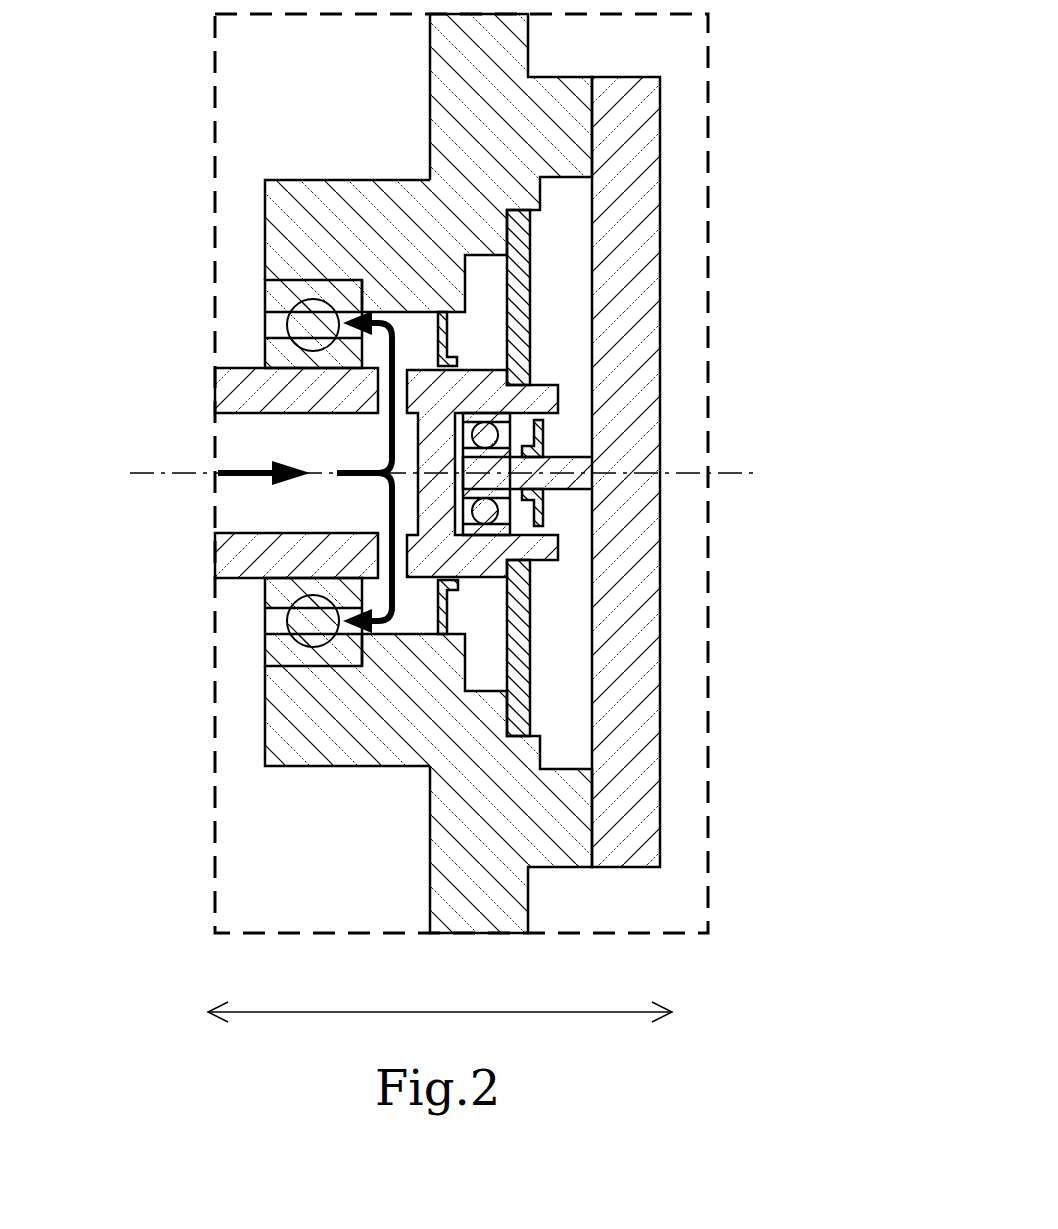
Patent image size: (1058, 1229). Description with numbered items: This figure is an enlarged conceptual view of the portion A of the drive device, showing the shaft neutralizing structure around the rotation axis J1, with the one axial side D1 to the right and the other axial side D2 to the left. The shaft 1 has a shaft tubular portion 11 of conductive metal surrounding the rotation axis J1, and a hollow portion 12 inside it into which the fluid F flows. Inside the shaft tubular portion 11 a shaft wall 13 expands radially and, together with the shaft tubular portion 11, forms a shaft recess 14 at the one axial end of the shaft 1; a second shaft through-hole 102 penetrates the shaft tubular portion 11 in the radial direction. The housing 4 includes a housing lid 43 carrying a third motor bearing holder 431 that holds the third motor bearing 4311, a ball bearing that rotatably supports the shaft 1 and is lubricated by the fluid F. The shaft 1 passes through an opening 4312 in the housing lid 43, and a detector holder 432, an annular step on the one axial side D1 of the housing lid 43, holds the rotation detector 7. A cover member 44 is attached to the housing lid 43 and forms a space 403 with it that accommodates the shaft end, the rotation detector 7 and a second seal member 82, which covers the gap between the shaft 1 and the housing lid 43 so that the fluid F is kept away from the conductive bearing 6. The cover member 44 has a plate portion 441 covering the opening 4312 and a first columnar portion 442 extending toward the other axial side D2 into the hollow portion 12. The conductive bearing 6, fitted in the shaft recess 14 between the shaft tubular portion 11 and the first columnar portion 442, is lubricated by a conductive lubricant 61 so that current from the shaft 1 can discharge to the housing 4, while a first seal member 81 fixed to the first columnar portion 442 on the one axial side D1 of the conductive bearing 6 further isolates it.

The housing 4 is at (476, 473).
The cover member 44 is at (673, 472).
The plate portion 441 is at (630, 800).
The first columnar portion 442 is at (560, 458).
The space 403 is at (560, 697).
The housing lid 43 is at (330, 473).
The third motor bearing holder 431 is at (265, 226).
The third motor bearing 4311 is at (265, 295).
The opening 4312 is at (412, 308).
The detector holder 432 is at (523, 193).
The rotation detector 7 is at (505, 248).
The second seal member 82 is at (447, 343).
The first seal member 81 is at (545, 448).
The shaft 1 is at (558, 398).
The second shaft through-hole 102 is at (375, 393).
The shaft tubular portion 11 is at (245, 553).
The hollow portion 12 is at (247, 508).
The shaft wall 13 is at (268, 612).
The conductive bearing 6 is at (647, 519).
The lubricant 61 is at (500, 513).
The shaft recess 14 is at (488, 537).
The portion A is at (215, 74).
The rotation axis J1 is at (175, 473).
The fluid F is at (250, 468).
The one axial side D1 is at (481, 1014).
The other axial side D2 is at (178, 1014).